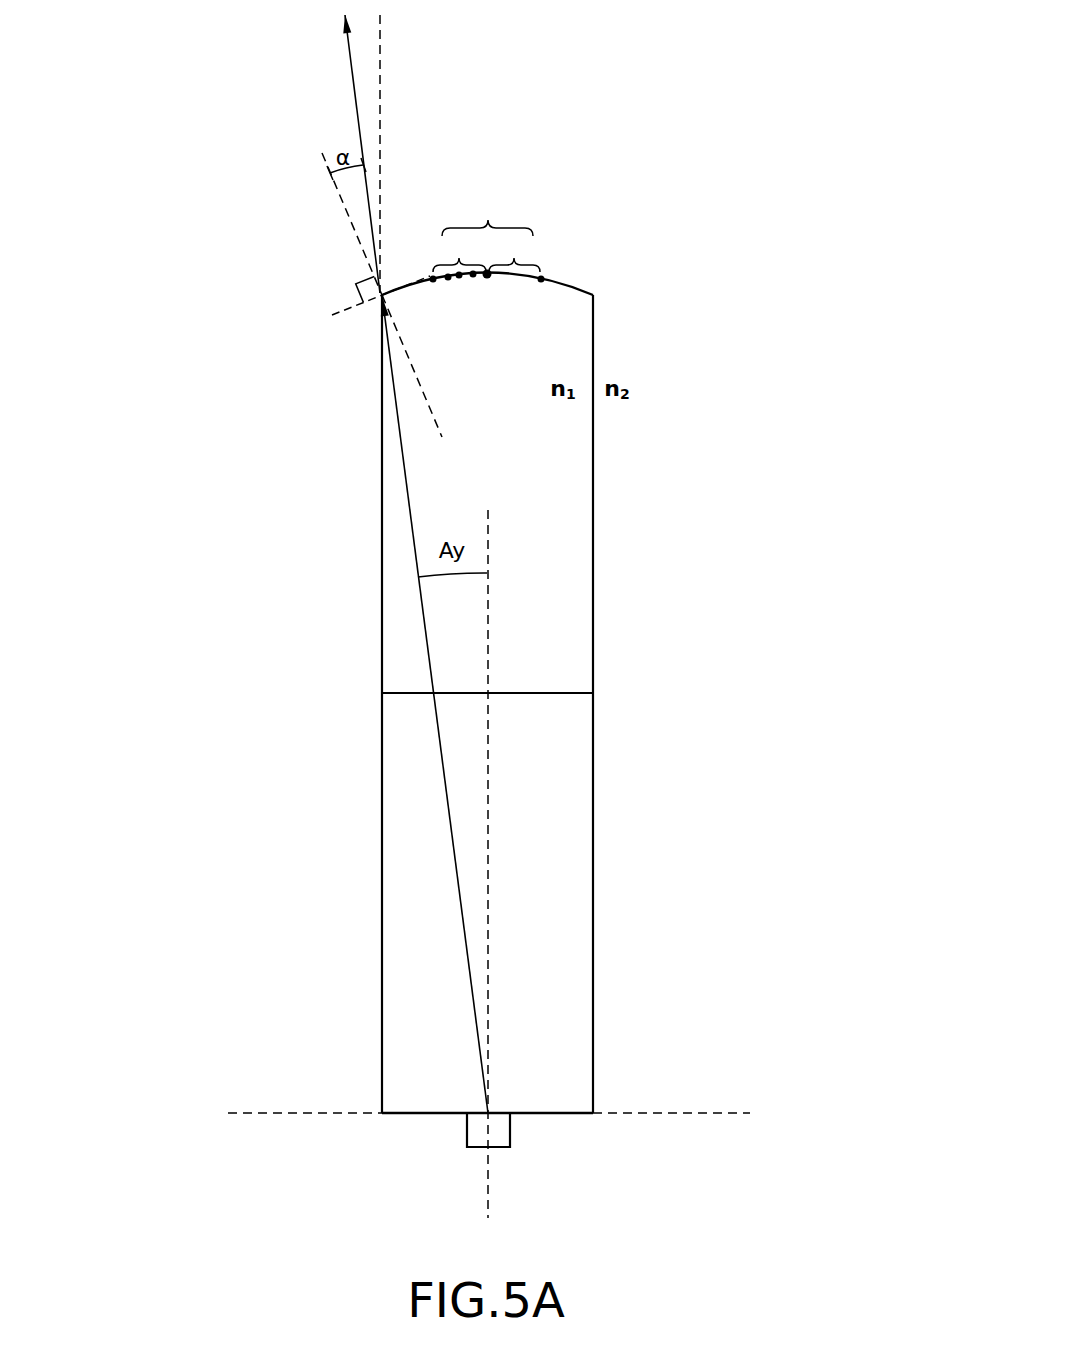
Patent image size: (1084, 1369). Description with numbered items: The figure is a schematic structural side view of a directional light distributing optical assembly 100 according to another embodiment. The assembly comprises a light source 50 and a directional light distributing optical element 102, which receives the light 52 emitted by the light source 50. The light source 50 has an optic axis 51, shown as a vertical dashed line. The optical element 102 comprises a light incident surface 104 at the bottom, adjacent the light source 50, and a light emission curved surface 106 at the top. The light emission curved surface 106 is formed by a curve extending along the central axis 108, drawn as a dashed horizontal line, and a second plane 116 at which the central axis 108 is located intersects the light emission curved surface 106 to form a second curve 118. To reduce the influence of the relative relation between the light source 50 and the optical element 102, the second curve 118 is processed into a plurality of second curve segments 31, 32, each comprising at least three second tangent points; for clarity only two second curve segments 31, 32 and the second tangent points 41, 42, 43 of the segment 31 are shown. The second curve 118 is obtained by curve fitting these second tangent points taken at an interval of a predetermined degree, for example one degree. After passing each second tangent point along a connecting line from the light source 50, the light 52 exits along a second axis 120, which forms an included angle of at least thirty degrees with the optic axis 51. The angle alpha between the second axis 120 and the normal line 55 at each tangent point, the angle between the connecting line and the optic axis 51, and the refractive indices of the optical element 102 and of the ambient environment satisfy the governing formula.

The directional light distributing optical assembly 100 is at (657, 107).
The directional light distributing optical element 102 is at (614, 458).
The light incident surface 104 is at (560, 1121).
The light emission curved surface 106 is at (570, 283).
The central axis 108 is at (683, 1113).
The second plane 116 is at (552, 620).
The second curve 118 is at (487, 214).
The second axis 120 is at (357, 112).
The second curve segment 31 is at (459, 251).
The second curve segment 32 is at (514, 251).
The second tangent point 41 is at (435, 283).
The second tangent point 42 is at (460, 280).
The second tangent point 43 is at (474, 281).
The light source 50 is at (470, 1133).
The optic axis 51 is at (485, 1165).
The light 52 is at (410, 488).
The normal line 55 is at (416, 375).